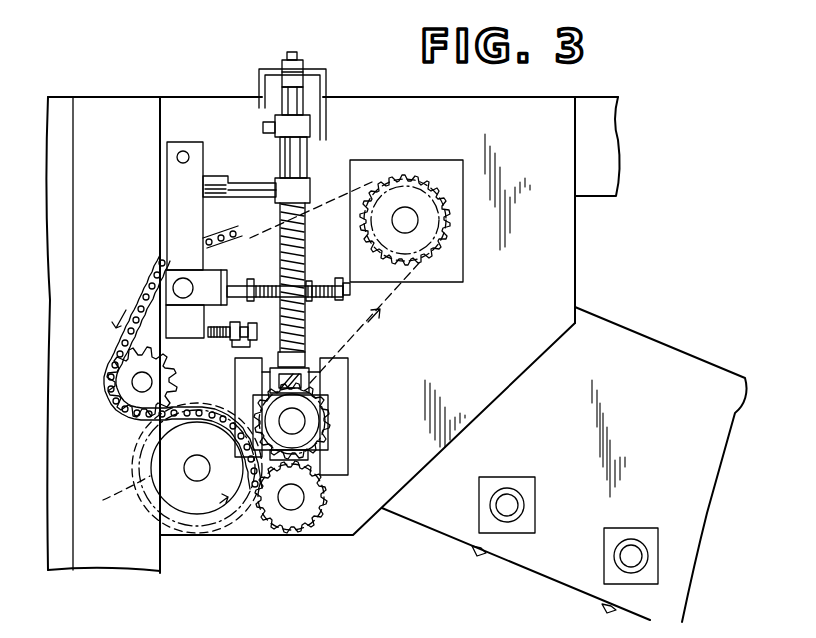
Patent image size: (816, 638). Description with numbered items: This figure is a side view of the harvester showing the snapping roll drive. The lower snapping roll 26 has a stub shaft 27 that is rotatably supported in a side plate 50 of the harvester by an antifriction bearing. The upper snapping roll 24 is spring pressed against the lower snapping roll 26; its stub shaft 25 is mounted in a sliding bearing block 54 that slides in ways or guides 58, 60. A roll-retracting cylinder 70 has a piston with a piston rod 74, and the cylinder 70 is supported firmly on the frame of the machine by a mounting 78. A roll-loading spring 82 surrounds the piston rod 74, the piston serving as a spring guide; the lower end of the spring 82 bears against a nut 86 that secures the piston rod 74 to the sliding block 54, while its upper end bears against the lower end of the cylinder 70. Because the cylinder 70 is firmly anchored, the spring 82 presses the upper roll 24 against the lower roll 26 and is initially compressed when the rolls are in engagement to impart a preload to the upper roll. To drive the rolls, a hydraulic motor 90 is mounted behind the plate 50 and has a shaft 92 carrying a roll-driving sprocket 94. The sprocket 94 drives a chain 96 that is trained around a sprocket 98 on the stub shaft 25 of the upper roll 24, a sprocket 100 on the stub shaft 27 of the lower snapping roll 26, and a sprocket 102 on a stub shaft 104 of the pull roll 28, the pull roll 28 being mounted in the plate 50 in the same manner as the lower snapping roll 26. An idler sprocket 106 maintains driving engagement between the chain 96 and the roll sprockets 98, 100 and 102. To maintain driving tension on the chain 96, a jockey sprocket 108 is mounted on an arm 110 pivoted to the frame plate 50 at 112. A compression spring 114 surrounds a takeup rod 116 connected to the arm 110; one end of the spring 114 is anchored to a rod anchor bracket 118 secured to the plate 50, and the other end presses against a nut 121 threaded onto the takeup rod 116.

The upper snapping roll 24 is at (326, 394).
The stub shaft 25 is at (274, 444).
The lower snapping roll 26 is at (339, 499).
The stub shaft 27 is at (298, 507).
The pull roll 28 is at (103, 335).
The side plate 50 is at (480, 344).
The sliding bearing block 54 is at (298, 428).
The guide 58 is at (243, 371).
The guide 60 is at (343, 412).
The roll-retracting cylinder 70 is at (281, 155).
The piston rod 74 is at (302, 238).
The mounting 78 is at (260, 81).
The roll-loading spring 82 is at (273, 228).
The nut 86 is at (303, 354).
The hydraulic motor 90 is at (424, 189).
The shaft 92 is at (405, 208).
The roll-driving sprocket 94 is at (441, 240).
The chain 96 is at (140, 421).
The sprocket 98 is at (260, 406).
The sprocket 100 is at (276, 521).
The sprocket 102 is at (185, 432).
The stub shaft 104 is at (190, 468).
The idler sprocket 106 is at (113, 394).
The jockey sprocket 108 is at (160, 279).
The arm 110 is at (172, 198).
The pivot 112 is at (176, 156).
The compression spring 114 is at (310, 286).
The takeup rod 116 is at (270, 297).
The rod anchor bracket 118 is at (345, 299).
The nut 121 is at (248, 281).